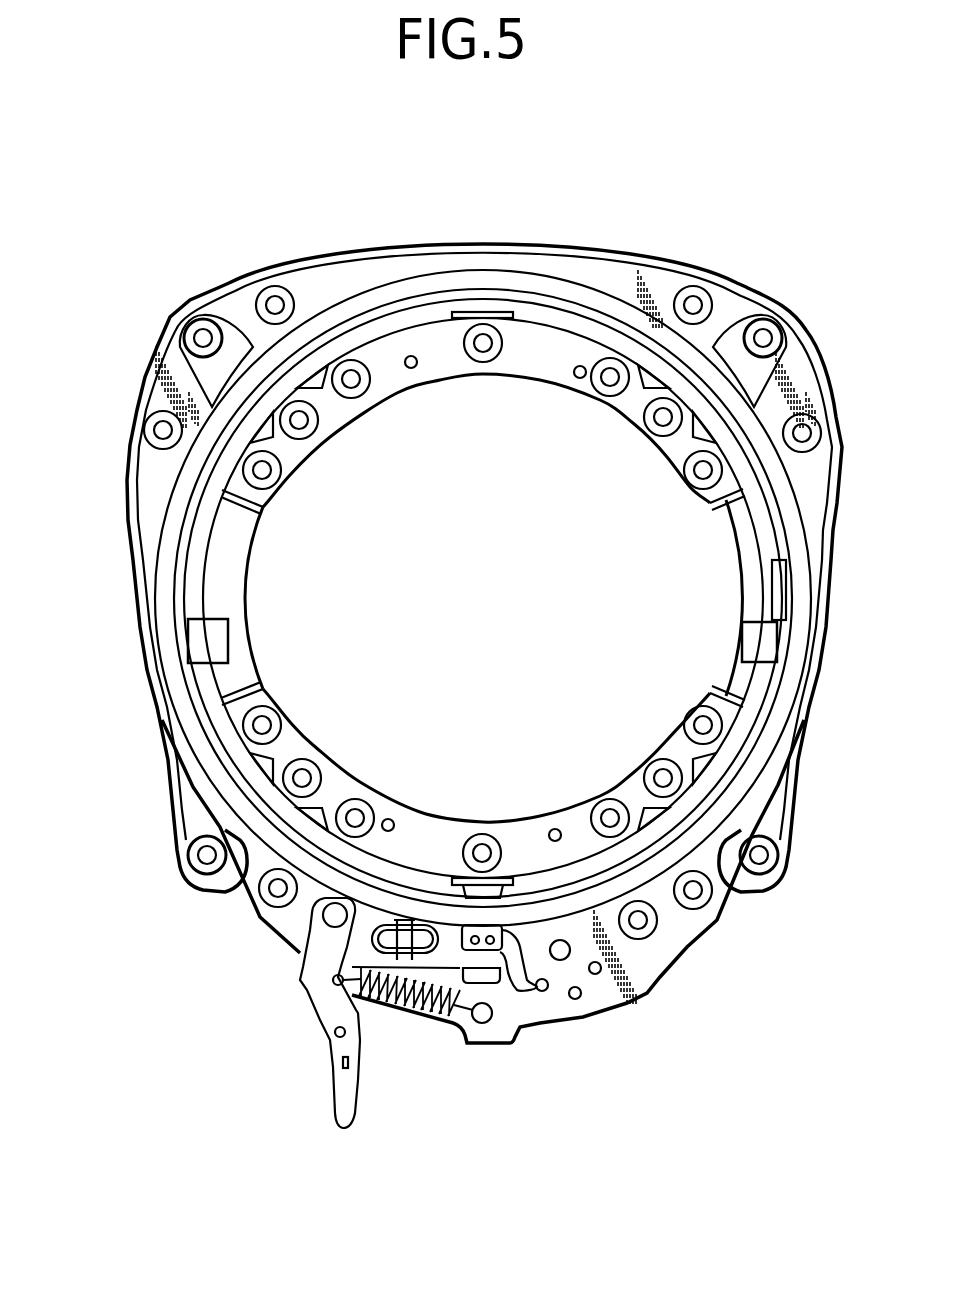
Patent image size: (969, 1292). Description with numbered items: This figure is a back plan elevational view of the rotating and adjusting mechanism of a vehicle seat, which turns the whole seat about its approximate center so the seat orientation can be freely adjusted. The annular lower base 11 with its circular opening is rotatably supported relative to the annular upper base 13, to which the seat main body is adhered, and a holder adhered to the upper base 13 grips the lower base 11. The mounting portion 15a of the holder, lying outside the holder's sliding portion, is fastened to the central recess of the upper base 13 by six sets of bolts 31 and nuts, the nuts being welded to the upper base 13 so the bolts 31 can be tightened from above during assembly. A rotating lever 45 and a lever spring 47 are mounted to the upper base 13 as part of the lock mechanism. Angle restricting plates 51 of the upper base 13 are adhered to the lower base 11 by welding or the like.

The lower base 11 is at (445, 360).
The upper base 13 is at (648, 997).
The mounting portion 15a is at (780, 390).
The bolts 31 is at (275, 305).
The rotating lever 45 is at (343, 1105).
The lever spring 47 is at (425, 1023).
The angle restricting plate 51 is at (215, 640).